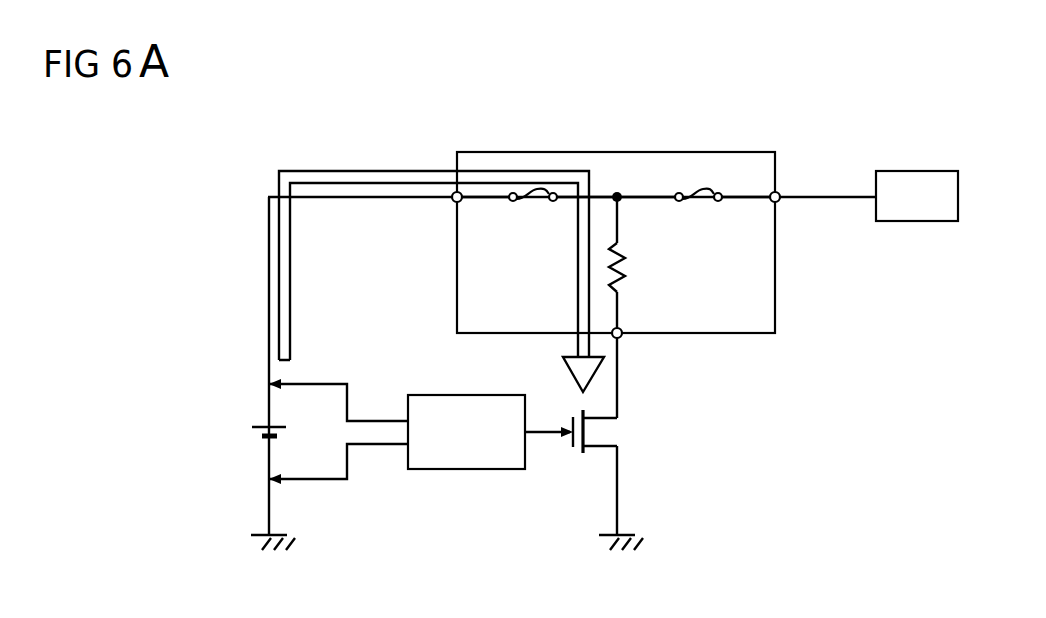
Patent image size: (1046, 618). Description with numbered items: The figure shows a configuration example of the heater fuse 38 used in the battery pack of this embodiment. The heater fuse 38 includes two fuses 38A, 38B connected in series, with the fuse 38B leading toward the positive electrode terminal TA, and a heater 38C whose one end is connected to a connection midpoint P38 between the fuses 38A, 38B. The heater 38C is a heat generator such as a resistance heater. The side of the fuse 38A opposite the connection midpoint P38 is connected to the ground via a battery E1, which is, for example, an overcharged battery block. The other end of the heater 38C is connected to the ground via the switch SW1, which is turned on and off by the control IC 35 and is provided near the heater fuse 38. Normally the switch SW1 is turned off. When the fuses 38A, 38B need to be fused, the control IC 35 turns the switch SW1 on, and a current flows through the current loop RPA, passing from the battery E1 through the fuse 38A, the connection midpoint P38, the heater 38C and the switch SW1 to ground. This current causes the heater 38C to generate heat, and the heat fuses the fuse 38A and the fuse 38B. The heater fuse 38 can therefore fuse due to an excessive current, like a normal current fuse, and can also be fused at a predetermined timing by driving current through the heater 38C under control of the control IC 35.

The current loop RPA is at (378, 171).
The heater fuse 38 is at (705, 152).
The fuse 38A is at (527, 200).
The fuse 38B is at (690, 200).
The heater 38C is at (622, 277).
The connection midpoint P38 is at (616, 191).
The positive electrode terminal TA is at (916, 171).
The control IC 35 is at (463, 395).
The switch SW1 is at (624, 433).
The battery E1 is at (257, 432).